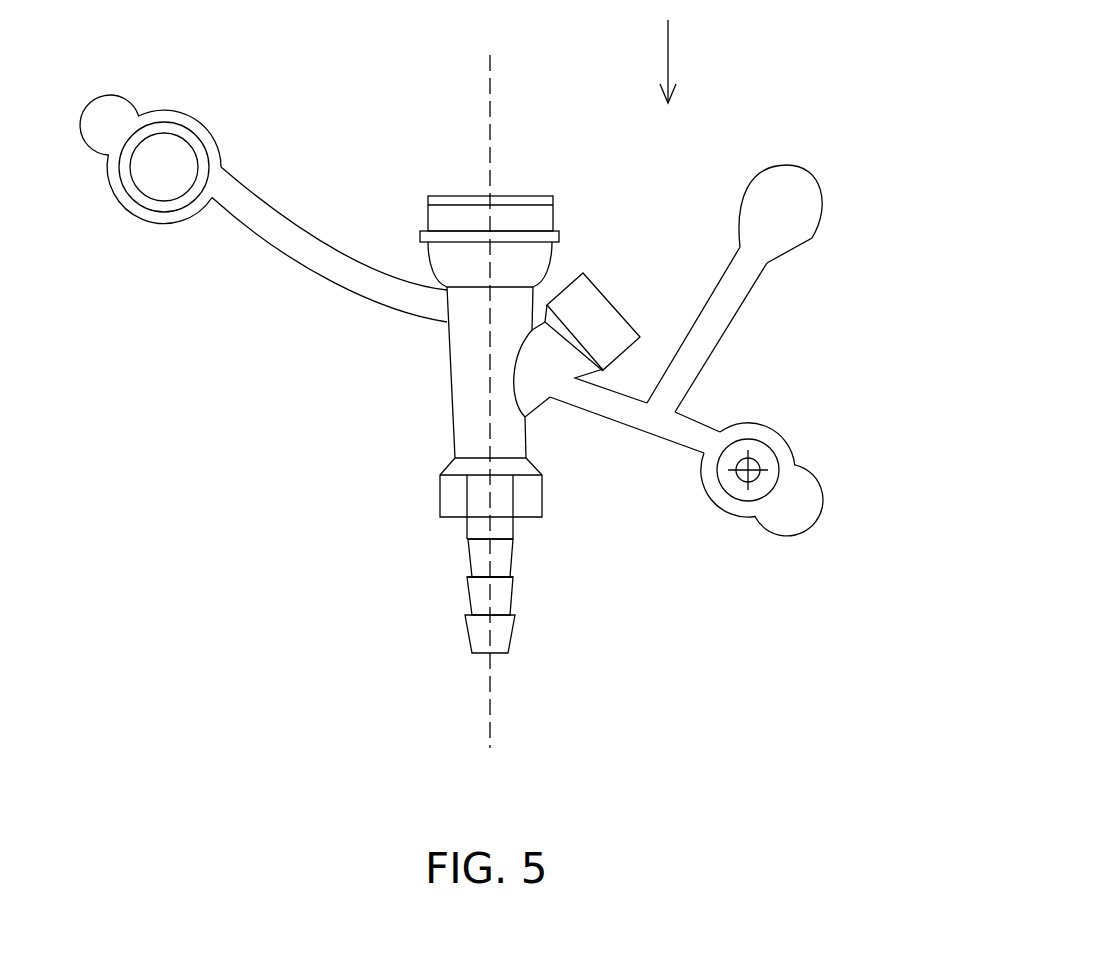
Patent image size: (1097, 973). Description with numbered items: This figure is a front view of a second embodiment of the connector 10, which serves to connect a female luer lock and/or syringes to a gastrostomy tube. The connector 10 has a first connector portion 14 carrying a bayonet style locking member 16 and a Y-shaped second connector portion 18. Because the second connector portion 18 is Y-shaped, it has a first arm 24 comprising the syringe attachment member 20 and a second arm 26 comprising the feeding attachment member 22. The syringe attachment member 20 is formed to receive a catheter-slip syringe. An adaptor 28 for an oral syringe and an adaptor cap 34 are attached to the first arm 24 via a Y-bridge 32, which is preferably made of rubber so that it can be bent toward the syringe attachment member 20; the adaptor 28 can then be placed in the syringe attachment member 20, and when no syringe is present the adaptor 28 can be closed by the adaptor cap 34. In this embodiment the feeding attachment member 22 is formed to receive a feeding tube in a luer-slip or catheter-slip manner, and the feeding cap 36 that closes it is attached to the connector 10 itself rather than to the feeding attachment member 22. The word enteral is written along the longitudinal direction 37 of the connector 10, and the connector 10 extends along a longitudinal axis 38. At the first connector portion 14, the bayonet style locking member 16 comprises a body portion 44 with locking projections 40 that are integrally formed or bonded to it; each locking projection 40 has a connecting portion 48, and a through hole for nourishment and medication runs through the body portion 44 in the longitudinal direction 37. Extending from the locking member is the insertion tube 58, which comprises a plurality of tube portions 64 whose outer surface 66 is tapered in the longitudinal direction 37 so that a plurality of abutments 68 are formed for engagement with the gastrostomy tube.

The connector 10 is at (735, 97).
The first connector portion 14 is at (366, 441).
The bayonet style locking member 16 is at (398, 508).
The second connector portion 18 is at (377, 237).
The syringe attachment member 20 is at (583, 273).
The feeding attachment member 22 is at (530, 195).
The first arm 24 is at (603, 317).
The second arm 26 is at (543, 250).
The adaptor 28 is at (782, 435).
The Y-bridge 32 is at (775, 335).
The adaptor cap 34 is at (807, 168).
The feeding cap 36 is at (193, 115).
The longitudinal direction 37 is at (663, 40).
The longitudinal axis 38 is at (502, 88).
The locking projection 40 is at (557, 491).
The body portion 44 is at (447, 490).
The connecting portion 48 is at (532, 508).
The insertion tube 58 is at (529, 630).
The tube portion 64 is at (480, 560).
The outer surface 66 is at (515, 582).
The abutment 68 is at (480, 615).